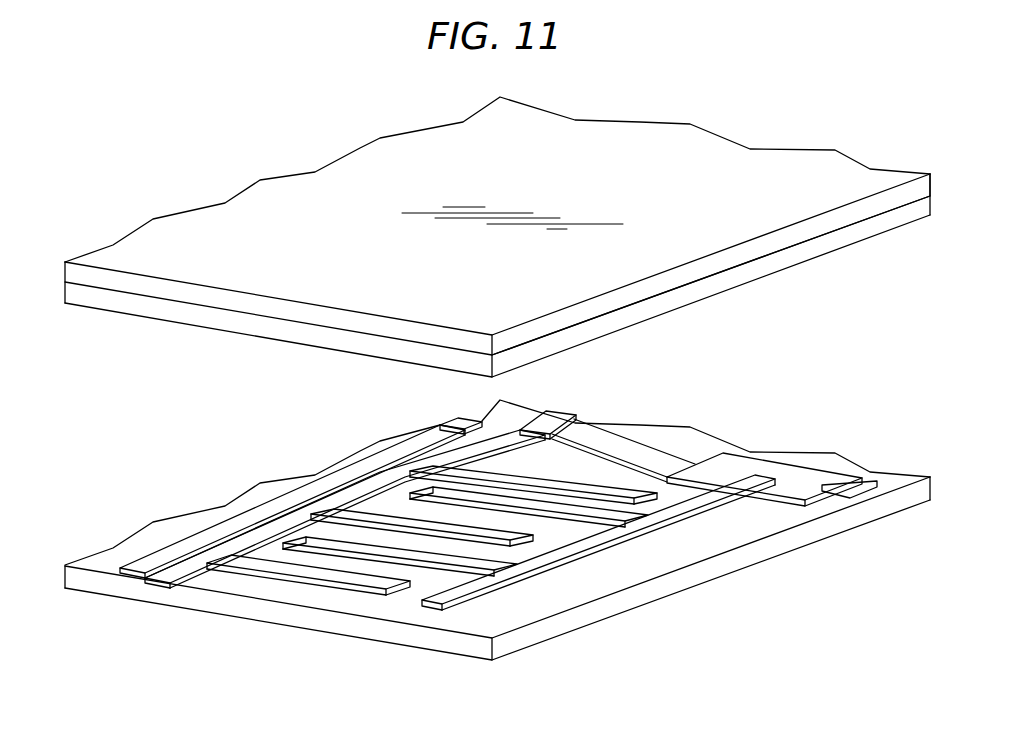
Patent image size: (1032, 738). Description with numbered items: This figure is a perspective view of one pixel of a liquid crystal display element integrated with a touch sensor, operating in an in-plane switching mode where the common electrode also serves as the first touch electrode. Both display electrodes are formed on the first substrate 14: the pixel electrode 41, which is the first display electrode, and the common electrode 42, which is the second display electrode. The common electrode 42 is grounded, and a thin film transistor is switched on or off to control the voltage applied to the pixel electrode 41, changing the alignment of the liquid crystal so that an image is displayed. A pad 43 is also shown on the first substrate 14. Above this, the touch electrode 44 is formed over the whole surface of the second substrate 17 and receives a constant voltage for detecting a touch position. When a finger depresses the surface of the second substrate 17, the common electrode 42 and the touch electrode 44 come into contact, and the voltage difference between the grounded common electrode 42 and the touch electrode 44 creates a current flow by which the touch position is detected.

The first substrate 14 is at (533, 637).
The second substrate 17 is at (752, 250).
The pixel electrode 41 is at (578, 545).
The common electrode 42 is at (272, 517).
The contact pad 43 is at (785, 470).
The touch electrode 44 is at (708, 288).